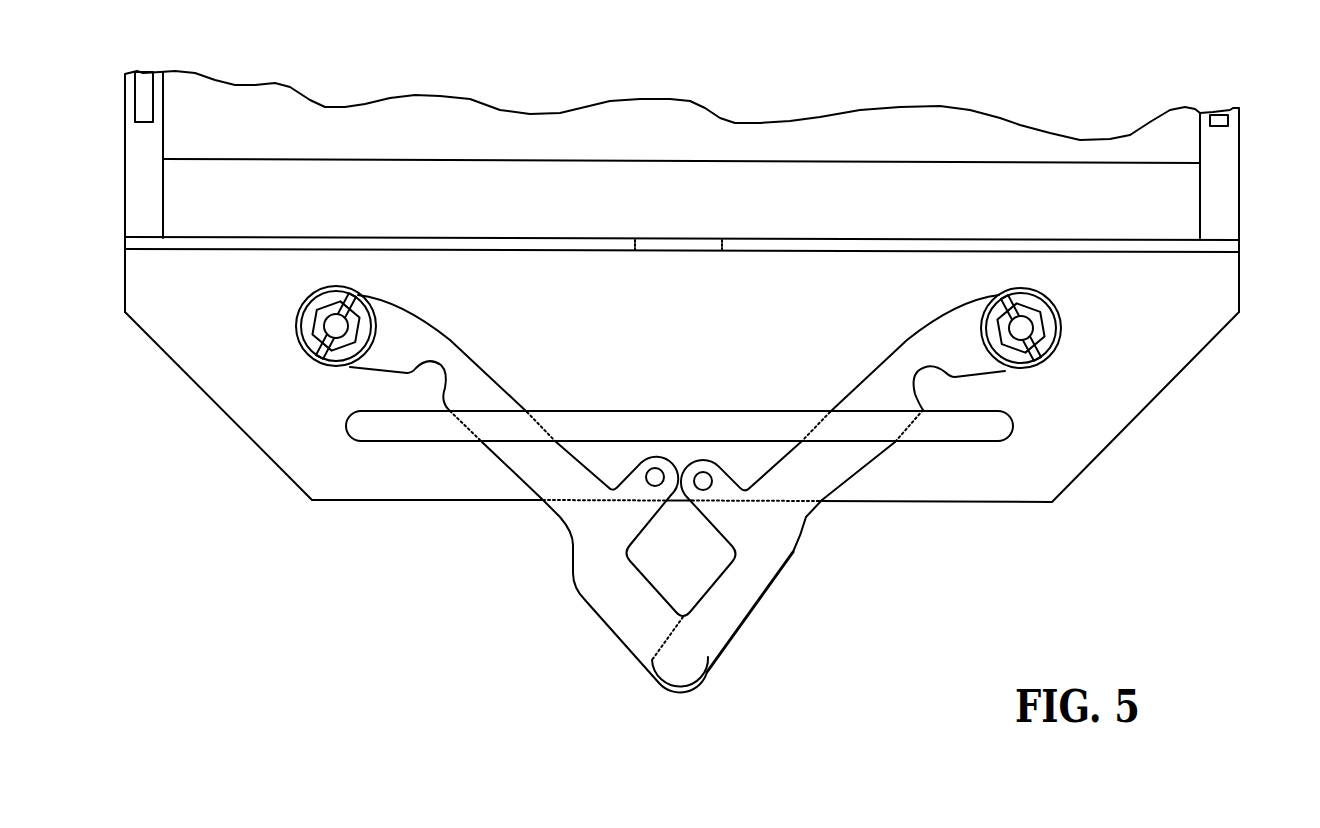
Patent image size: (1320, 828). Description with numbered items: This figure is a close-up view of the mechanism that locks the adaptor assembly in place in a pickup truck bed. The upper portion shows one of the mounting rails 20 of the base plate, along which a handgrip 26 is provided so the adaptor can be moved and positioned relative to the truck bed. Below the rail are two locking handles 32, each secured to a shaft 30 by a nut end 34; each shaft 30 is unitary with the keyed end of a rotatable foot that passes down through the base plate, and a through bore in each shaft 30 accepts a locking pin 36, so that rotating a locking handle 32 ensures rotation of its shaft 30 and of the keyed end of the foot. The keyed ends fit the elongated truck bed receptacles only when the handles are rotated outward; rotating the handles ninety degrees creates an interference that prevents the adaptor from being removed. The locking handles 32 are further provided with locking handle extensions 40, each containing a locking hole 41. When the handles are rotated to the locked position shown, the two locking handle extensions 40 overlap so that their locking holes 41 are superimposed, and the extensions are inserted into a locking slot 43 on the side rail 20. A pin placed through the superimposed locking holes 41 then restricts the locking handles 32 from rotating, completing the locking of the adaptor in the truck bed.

The mounting rail 20 is at (1223, 191).
The handgrip 26 is at (983, 430).
The shaft 30 is at (337, 324).
The locking handle 32 is at (628, 622).
The nut end 34 is at (313, 332).
The locking pin 36 is at (318, 360).
The locking handle extension 40 is at (730, 520).
The locking hole 41 is at (655, 468).
The locking slot 43 is at (679, 241).